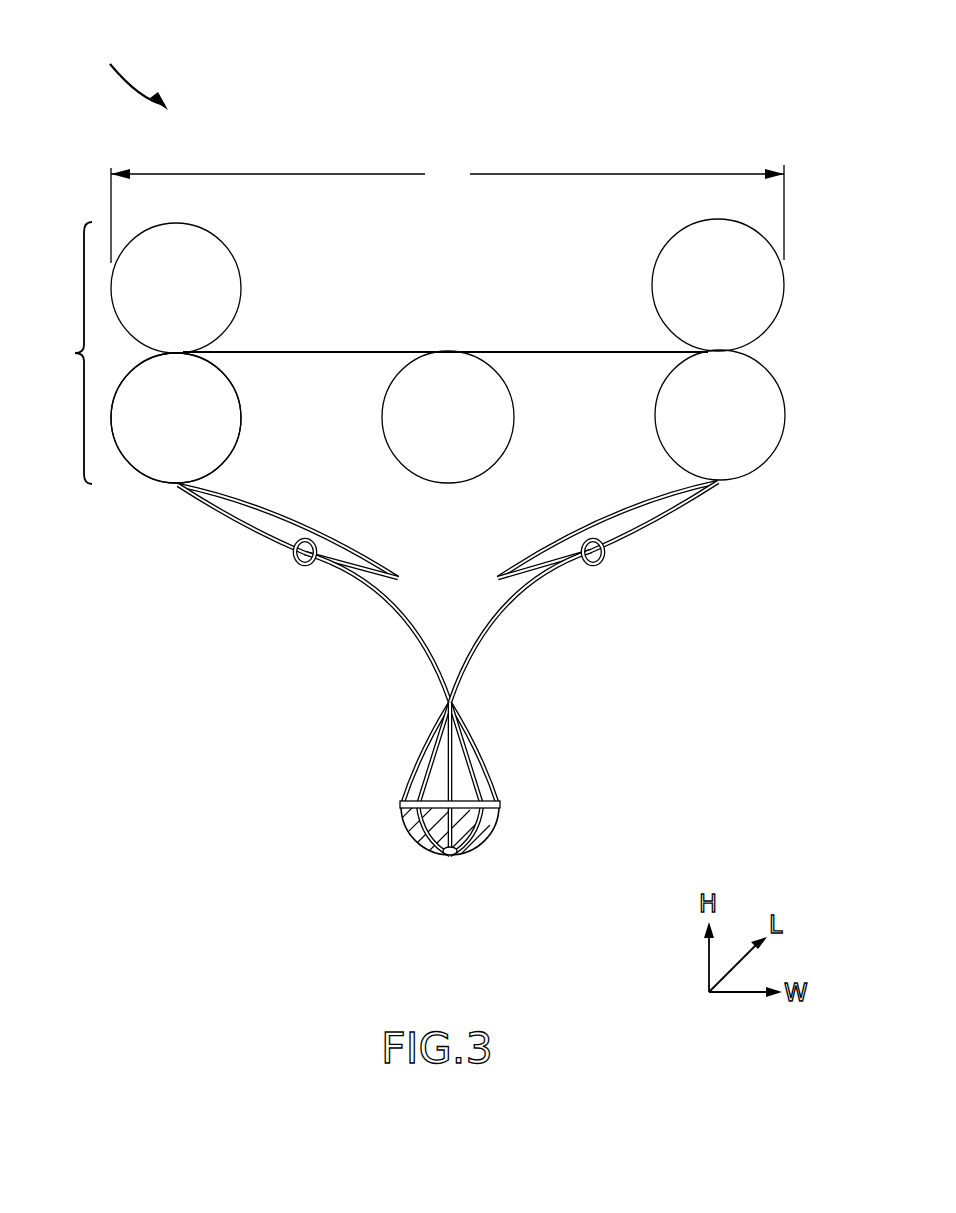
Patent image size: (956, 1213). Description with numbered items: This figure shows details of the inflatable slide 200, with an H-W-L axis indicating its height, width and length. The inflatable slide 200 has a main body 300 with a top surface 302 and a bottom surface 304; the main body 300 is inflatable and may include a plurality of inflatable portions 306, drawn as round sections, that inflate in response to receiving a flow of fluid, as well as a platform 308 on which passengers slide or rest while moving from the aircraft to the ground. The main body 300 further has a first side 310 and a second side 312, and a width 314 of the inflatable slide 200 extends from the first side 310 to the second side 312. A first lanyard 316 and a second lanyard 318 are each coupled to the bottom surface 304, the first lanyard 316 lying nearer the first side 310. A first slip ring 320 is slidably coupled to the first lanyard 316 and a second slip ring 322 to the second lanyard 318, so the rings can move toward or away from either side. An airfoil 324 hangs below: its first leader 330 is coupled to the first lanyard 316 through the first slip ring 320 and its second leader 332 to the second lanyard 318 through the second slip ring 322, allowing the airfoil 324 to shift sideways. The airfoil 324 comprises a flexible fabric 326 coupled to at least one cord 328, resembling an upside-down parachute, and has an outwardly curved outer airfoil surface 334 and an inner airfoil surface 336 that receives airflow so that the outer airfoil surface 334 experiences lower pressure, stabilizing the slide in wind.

The inflatable slide 200 is at (128, 74).
The main body 300 is at (63, 353).
The top surface 302 is at (177, 223).
The bottom surface 304 is at (175, 485).
The inflatable portions 306 is at (793, 208).
The platform 308 is at (287, 352).
The first side 310 is at (110, 418).
The second side 312 is at (785, 413).
The width 314 is at (447, 212).
The first lanyard 316 is at (250, 528).
The second lanyard 318 is at (672, 508).
The first slip ring 320 is at (298, 568).
The second slip ring 322 is at (604, 560).
The airfoil 324 is at (469, 819).
The fabric 326 is at (437, 833).
The cord 328 is at (483, 762).
The first leader 330 is at (409, 620).
The second leader 332 is at (484, 627).
The outer airfoil surface 334 is at (467, 857).
The inner airfoil surface 336 is at (428, 798).